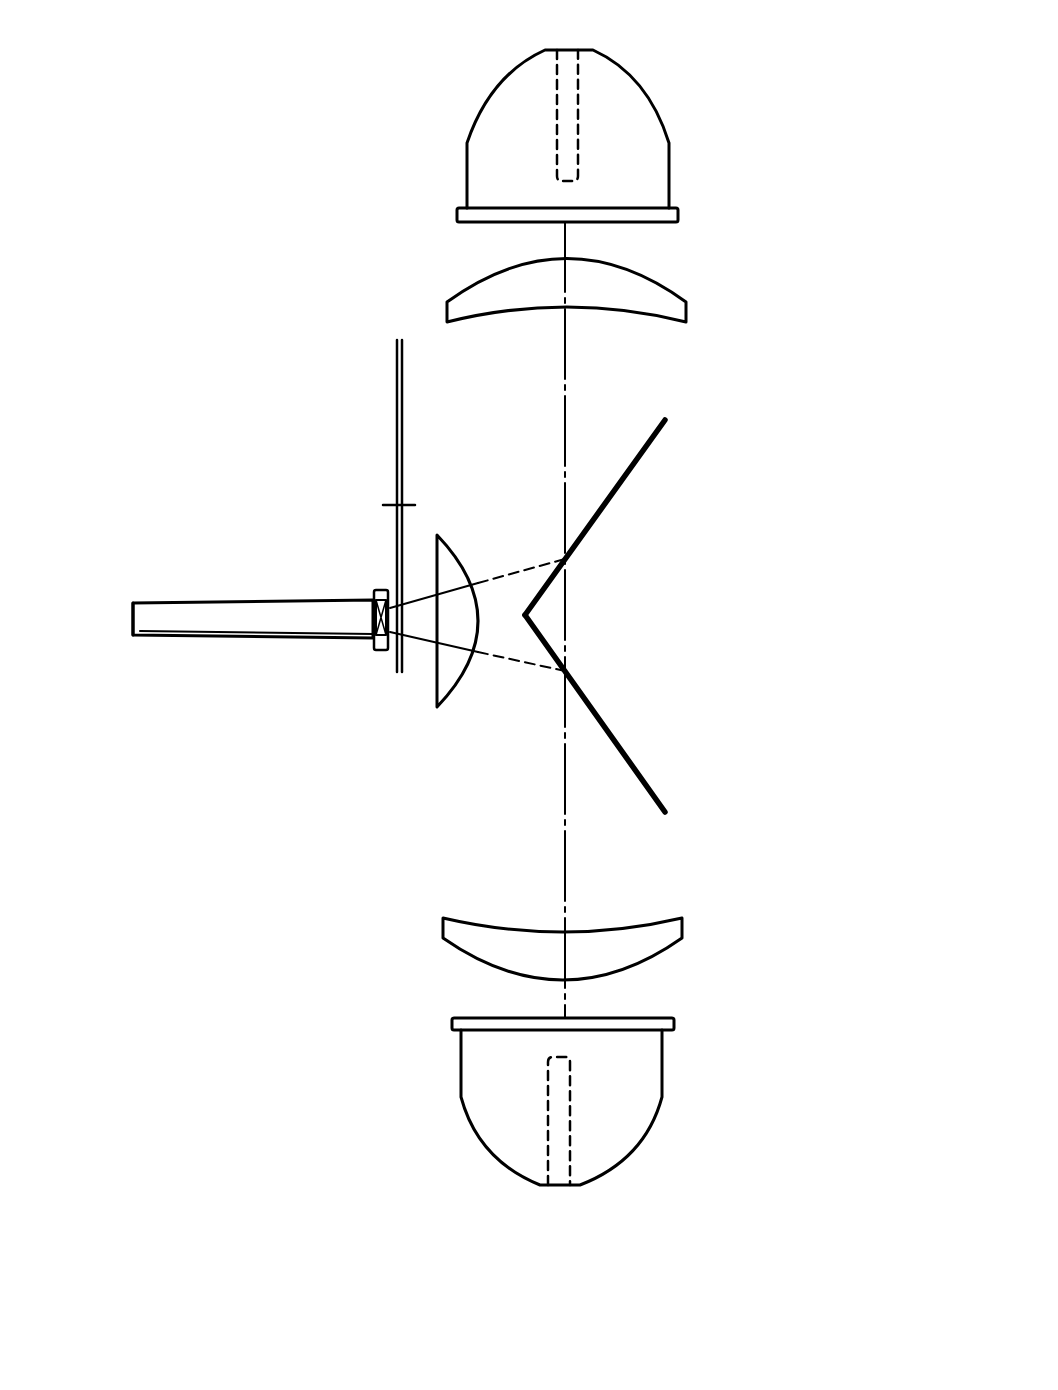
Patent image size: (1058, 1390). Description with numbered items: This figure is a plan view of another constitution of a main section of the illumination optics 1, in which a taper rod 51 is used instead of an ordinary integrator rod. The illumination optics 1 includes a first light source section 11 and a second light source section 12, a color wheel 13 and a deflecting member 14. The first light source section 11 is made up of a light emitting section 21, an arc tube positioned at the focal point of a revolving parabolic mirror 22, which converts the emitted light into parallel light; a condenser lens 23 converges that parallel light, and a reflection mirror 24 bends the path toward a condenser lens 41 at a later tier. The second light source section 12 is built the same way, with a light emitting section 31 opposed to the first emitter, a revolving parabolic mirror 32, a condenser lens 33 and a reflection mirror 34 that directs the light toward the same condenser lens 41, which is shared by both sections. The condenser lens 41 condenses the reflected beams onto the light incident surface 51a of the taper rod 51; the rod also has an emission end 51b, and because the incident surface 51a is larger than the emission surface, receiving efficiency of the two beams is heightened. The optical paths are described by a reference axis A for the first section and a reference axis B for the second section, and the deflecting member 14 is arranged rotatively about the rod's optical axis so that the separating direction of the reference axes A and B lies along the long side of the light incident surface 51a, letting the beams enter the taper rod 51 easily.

The illumination optics 1 is at (132, 220).
The first light source section 11 is at (883, 108).
The second light source section 12 is at (874, 1130).
The color wheel 13 is at (397, 450).
The deflecting member 14 is at (375, 652).
The light emitting section 21 is at (558, 95).
The revolving parabolic mirror 22 is at (669, 164).
The condenser lens 23 is at (686, 305).
The reflection mirror 24 is at (610, 500).
The light emitting section 31 is at (557, 1133).
The revolving parabolic mirror 32 is at (663, 1073).
The condenser lens 33 is at (682, 930).
The reflection mirror 34 is at (617, 738).
The condenser lens 41 is at (452, 697).
The taper rod 51 is at (222, 636).
The light incident surface 51a is at (374, 608).
The board end portion 51b is at (133, 620).
The reference axis A is at (533, 568).
The reference axis B is at (537, 680).